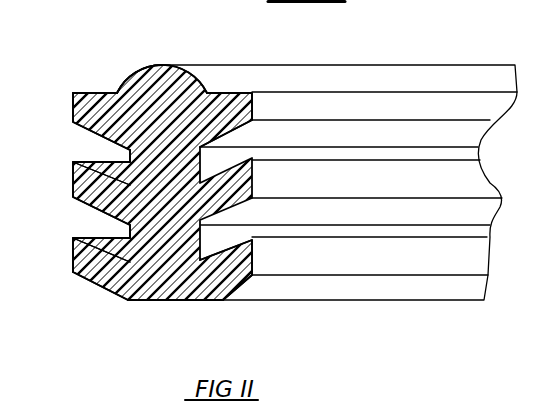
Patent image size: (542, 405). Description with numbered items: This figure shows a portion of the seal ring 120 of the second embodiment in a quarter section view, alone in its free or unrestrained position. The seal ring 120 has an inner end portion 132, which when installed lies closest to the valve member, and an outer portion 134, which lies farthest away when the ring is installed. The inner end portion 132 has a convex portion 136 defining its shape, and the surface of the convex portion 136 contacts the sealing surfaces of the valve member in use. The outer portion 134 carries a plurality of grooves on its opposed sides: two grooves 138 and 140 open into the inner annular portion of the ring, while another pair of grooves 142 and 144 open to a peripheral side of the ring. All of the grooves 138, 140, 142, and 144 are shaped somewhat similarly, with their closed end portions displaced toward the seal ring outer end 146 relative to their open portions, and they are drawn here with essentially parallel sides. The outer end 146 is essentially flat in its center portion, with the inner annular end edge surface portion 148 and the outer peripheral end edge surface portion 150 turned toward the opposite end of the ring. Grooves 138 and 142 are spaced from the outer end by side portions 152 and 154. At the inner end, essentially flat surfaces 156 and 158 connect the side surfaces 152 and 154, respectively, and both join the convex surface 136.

The seal ring 120 is at (162, 90).
The inner end portion 132 is at (143, 78).
The convex portion 136 is at (155, 65).
The flat surface 156 is at (103, 93).
The side portion 152 is at (73, 112).
The groove 142 is at (100, 160).
The groove 144 is at (100, 238).
The outer peripheral end edge surface portion 150 is at (102, 288).
The outer portion 134 is at (155, 265).
The outer end 146 is at (172, 302).
The inner annular end edge surface portion 148 is at (233, 297).
The flat surface 158 is at (232, 92).
The side portion 154 is at (341, 168).
The groove 138 is at (293, 159).
The groove 140 is at (313, 220).